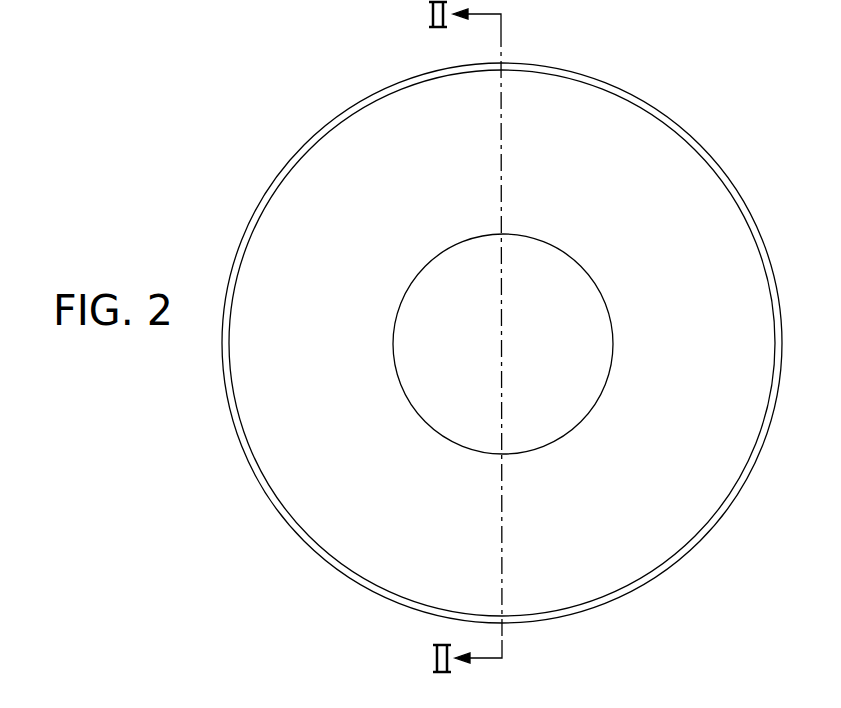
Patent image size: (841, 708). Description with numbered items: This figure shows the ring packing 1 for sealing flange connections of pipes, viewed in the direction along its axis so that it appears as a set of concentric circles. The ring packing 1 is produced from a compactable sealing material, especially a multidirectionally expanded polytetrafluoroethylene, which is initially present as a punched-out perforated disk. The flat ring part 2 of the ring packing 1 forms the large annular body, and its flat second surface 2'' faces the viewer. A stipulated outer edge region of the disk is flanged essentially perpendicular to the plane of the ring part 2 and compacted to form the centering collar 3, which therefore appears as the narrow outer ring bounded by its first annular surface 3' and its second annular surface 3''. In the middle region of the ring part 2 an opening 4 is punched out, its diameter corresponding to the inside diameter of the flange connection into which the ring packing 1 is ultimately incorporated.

The ring packing 1 is at (402, 72).
The ring part 2 is at (462, 241).
The second surface 2'' is at (363, 218).
The centering collar 3 is at (482, 311).
The first annular surface 3' is at (482, 311).
The second annular surface 3'' is at (502, 343).
The opening 4 is at (503, 320).